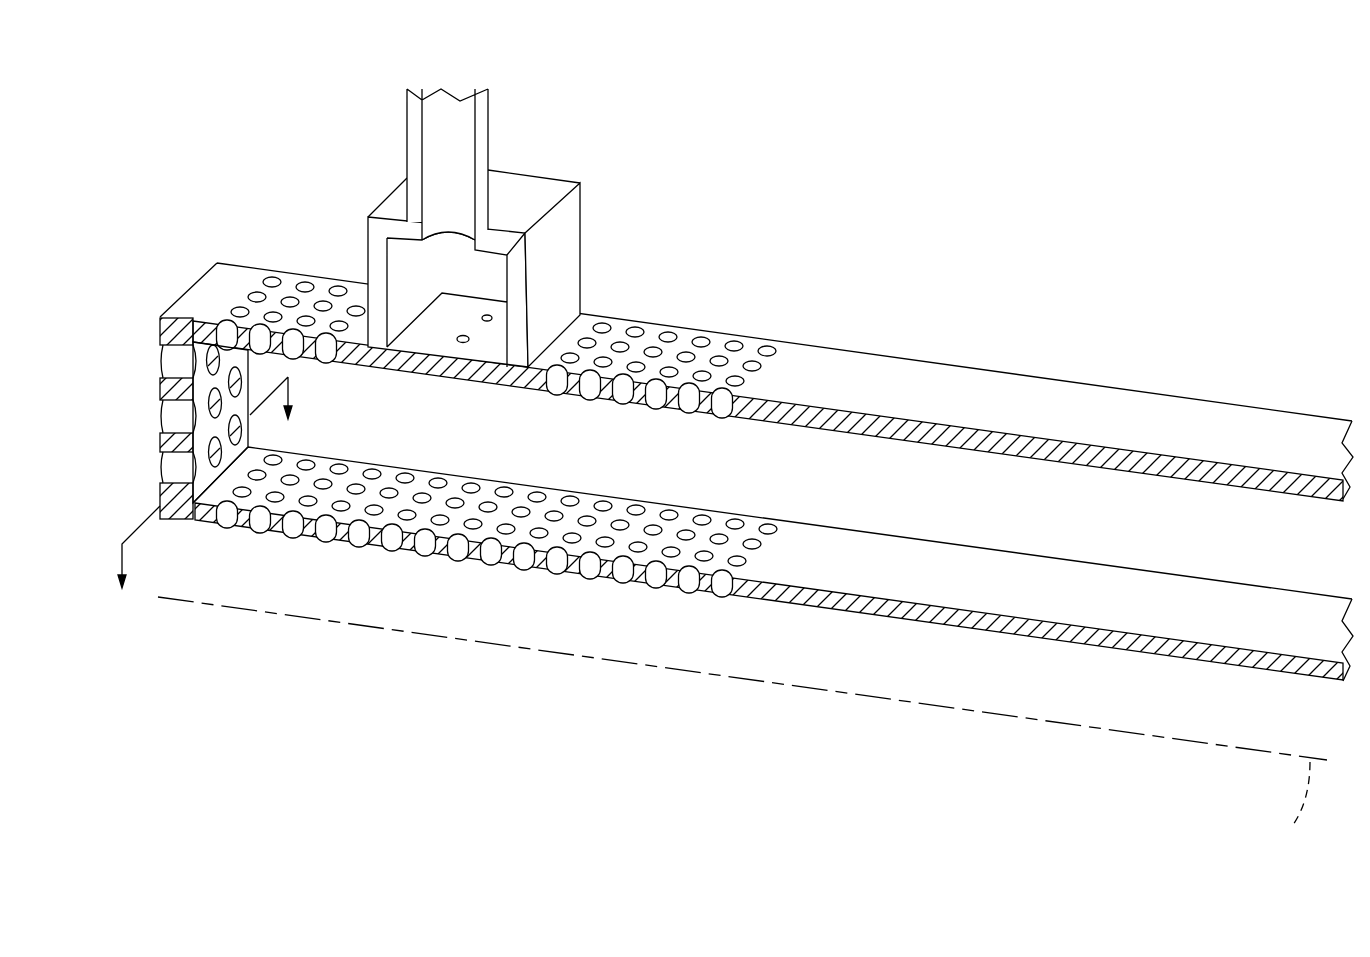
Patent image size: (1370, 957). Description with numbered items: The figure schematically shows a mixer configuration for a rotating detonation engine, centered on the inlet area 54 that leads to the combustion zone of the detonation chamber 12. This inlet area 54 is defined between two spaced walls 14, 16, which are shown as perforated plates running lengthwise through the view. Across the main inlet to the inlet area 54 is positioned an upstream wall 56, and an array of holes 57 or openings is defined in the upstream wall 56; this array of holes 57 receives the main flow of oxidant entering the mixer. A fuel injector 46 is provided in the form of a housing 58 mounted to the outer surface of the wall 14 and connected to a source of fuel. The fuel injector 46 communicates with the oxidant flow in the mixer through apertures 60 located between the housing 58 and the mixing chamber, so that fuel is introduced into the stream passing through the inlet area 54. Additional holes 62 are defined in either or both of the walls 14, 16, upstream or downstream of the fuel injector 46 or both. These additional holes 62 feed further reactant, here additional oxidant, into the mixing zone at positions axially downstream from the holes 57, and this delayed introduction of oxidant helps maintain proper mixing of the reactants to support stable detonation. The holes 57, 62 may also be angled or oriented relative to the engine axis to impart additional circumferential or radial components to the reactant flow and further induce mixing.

The detonation chamber 12 is at (713, 462).
The wall 14 is at (1005, 378).
The wall 16 is at (963, 590).
The fuel injector 46 is at (528, 150).
The inlet area 54 is at (775, 445).
The upstream wall 56 is at (158, 440).
The holes 57 is at (175, 412).
The housing 58 is at (515, 268).
The apertures 60 is at (462, 336).
The additional holes 62 is at (274, 280).